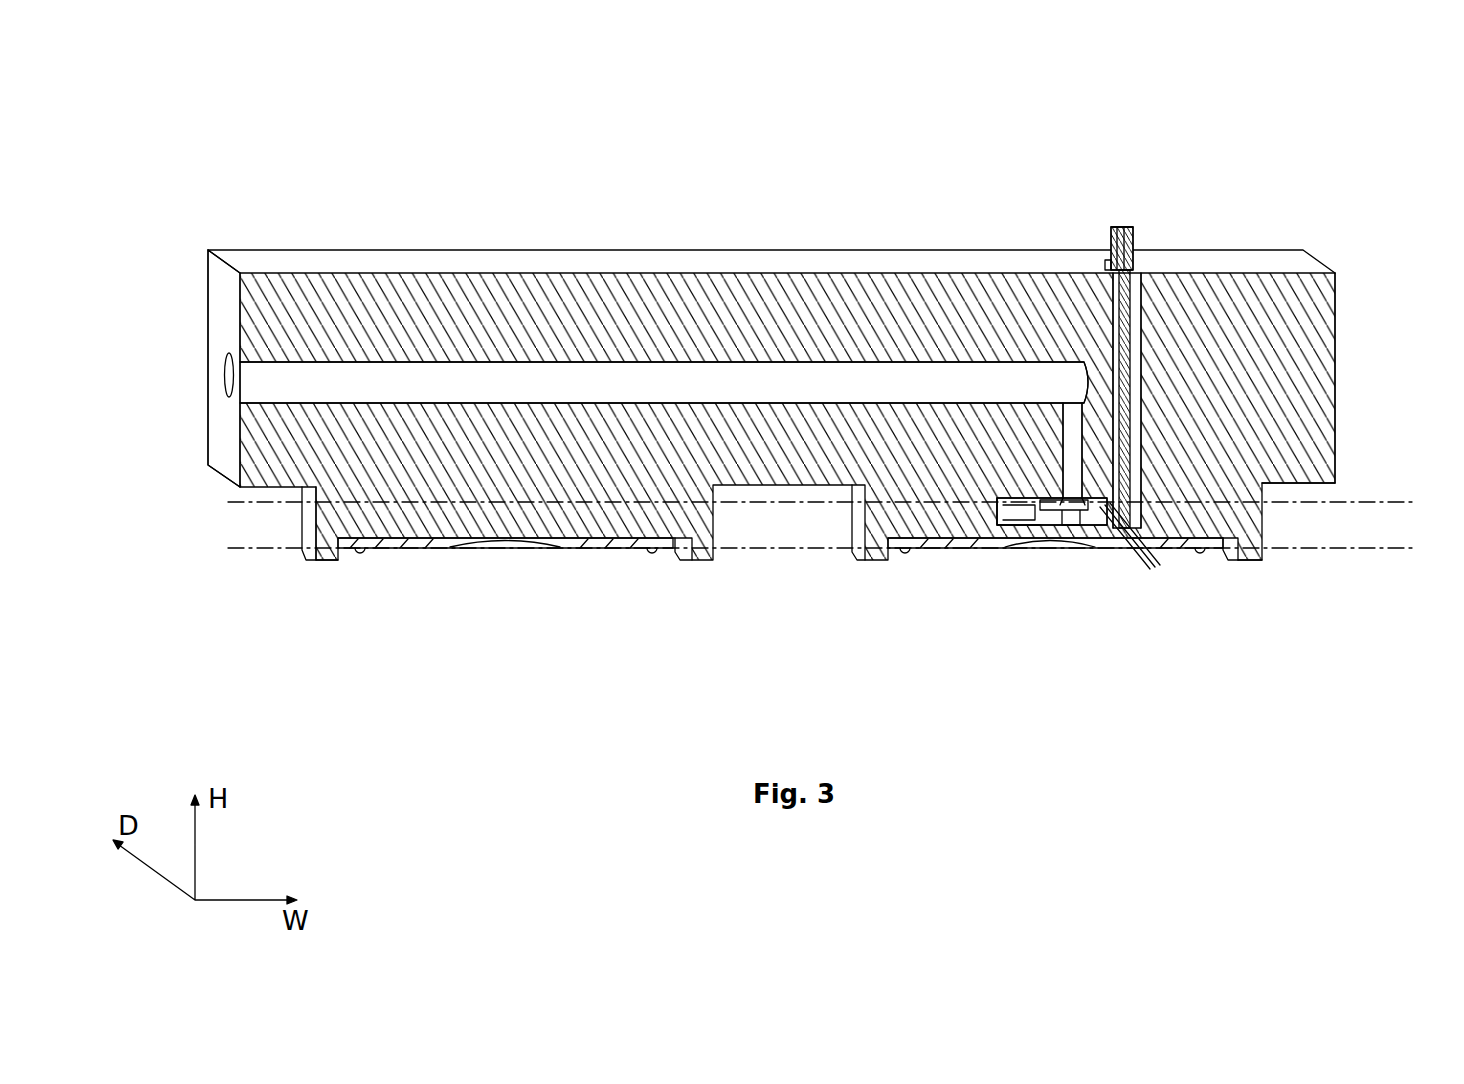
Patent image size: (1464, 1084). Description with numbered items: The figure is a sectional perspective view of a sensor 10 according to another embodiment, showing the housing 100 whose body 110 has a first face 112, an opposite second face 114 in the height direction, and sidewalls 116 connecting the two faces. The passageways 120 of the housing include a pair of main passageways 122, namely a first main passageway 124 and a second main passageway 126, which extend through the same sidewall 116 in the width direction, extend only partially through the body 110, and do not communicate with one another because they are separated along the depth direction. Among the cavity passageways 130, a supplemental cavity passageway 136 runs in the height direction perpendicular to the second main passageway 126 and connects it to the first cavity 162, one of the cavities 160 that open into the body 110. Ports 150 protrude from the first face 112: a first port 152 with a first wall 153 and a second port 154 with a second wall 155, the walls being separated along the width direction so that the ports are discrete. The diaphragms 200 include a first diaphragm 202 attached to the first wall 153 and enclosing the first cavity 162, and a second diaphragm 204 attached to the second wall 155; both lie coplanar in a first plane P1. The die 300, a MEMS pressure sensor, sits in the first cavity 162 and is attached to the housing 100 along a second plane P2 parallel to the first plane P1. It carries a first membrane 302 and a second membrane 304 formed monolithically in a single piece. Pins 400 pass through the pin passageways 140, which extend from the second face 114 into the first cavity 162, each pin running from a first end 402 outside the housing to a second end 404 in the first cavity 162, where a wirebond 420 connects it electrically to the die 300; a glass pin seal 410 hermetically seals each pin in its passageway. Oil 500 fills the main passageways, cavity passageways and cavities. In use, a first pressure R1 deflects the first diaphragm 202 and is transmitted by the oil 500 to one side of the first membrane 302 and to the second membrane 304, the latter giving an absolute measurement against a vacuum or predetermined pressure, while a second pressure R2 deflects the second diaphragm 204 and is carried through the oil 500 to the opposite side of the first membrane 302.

The sensor 10 is at (203, 105).
The housing 100 is at (820, 240).
The body 110 is at (833, 359).
The first face 112 is at (1306, 480).
The second face 114 is at (1243, 251).
The sidewalls 116 is at (213, 295).
The passageways 120 is at (200, 420).
The main passageways 122 is at (158, 367).
The first main passageway 124 is at (216, 370).
The second main passageway 126 is at (664, 390).
The cavity passageways 130 is at (1011, 351).
The supplemental cavity passageway 136 is at (1068, 398).
The pin passageways 140 is at (1263, 367).
The ports 150 is at (741, 562).
The first port 152 is at (1259, 570).
The first wall 153 is at (1265, 552).
The second port 154 is at (296, 575).
The second wall 155 is at (328, 561).
The cavities 160 is at (980, 593).
The first cavity 162 is at (1030, 548).
The diaphragms 200 is at (780, 589).
The first diaphragm 202 is at (929, 549).
The second diaphragm 204 is at (450, 549).
The die 300 is at (1061, 593).
The first membrane 302 is at (1061, 593).
The second membrane 304 is at (1065, 548).
The pins 400 is at (1119, 345).
The first end 402 is at (1130, 227).
The second end 404 is at (1156, 583).
The pin seal 410 is at (1150, 320).
The wirebond 420 is at (1155, 567).
The oil 500 is at (620, 394).
The first pressure R1 is at (1057, 568).
The second pressure R2 is at (509, 568).
The first plane P1 is at (841, 545).
The second plane P2 is at (841, 501).